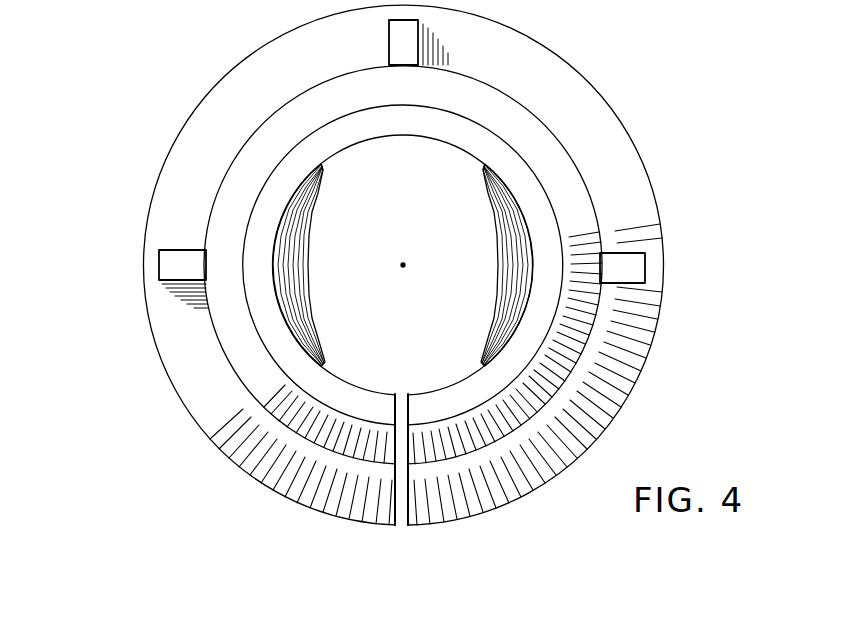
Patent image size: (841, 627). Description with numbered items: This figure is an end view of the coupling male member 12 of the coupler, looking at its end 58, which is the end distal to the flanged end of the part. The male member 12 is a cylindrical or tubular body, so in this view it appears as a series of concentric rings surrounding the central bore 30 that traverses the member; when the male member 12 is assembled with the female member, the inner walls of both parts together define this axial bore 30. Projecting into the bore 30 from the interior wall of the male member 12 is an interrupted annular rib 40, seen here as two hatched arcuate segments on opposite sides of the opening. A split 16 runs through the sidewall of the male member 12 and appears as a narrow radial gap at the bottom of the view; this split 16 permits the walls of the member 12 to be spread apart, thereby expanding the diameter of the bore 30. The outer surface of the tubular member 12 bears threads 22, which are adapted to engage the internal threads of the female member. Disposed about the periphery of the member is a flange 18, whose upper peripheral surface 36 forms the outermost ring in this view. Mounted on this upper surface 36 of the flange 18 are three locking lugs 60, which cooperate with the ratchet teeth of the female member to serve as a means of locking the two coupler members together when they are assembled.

The coupling male member 12 is at (643, 373).
The split 16 is at (400, 505).
The flange 18 is at (590, 444).
The threads 22 is at (278, 373).
The bore 30 is at (403, 265).
The upper peripheral surface 36 is at (178, 204).
The interrupted annular rib 40 is at (495, 200).
The end 58 is at (157, 78).
The locking lugs 60 is at (398, 31).